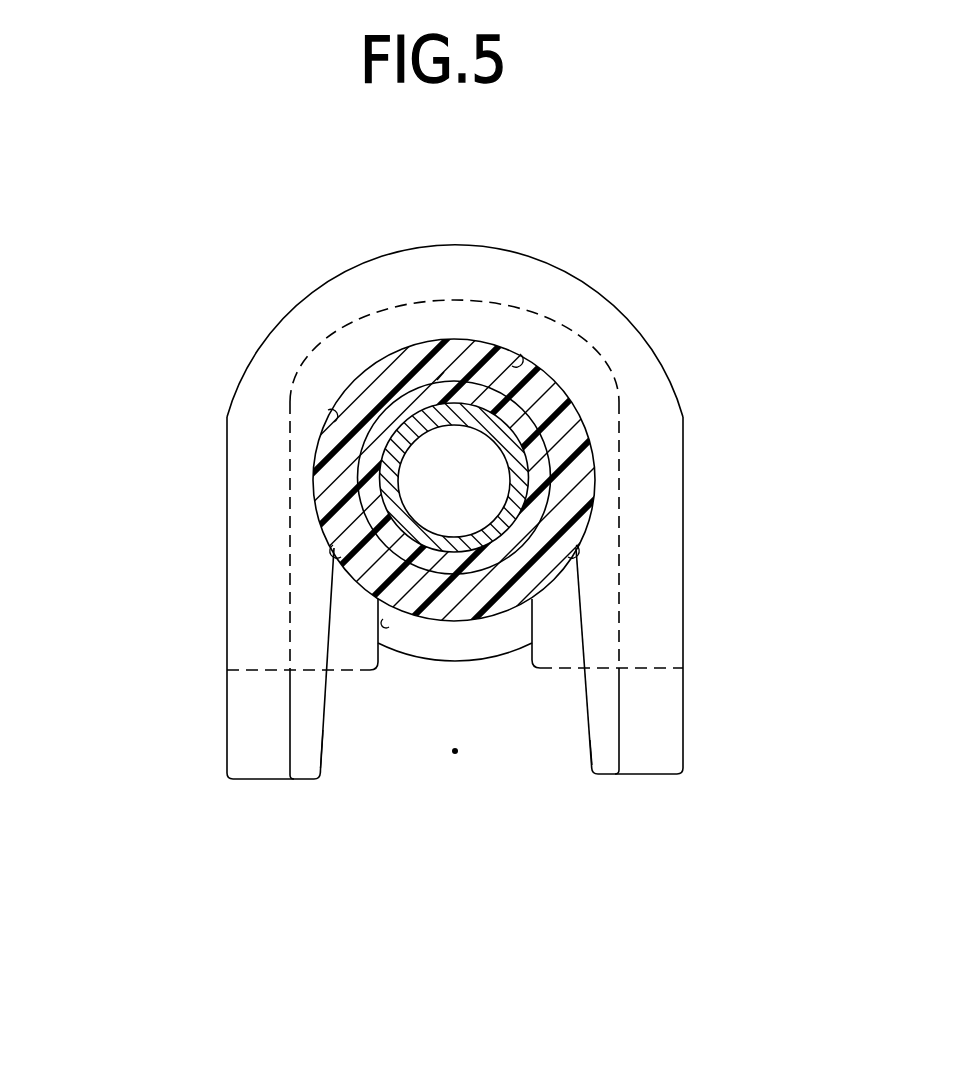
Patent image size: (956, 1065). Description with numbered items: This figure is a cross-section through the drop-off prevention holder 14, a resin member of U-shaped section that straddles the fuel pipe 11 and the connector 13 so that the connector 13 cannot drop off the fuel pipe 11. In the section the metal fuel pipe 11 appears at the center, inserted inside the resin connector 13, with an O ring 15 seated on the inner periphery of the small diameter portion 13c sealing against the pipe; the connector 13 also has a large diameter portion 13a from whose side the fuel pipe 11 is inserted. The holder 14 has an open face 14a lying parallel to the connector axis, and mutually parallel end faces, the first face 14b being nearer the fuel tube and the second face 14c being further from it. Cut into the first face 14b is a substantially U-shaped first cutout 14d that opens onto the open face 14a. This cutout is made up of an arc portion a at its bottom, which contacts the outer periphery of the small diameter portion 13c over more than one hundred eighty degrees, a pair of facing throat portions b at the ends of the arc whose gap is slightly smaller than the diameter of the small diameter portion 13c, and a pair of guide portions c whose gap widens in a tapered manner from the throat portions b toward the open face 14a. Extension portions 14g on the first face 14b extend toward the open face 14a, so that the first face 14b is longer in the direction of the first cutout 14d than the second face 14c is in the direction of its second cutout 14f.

The fuel pipe 11 is at (485, 422).
The connector 13 is at (383, 358).
The large diameter portion 13a is at (432, 637).
The small diameter portion 13c is at (477, 353).
The drop-off prevention holder 14 is at (678, 378).
The open face 14a is at (457, 758).
The first face 14b is at (660, 587).
The second face 14c is at (533, 660).
The first cutout 14d is at (335, 412).
The second cutout 14f is at (378, 620).
The extension portions 14g is at (263, 753).
The O ring 15 is at (437, 380).
The arc portion a is at (520, 353).
The throat portions b is at (345, 545).
The guide portions c is at (323, 730).